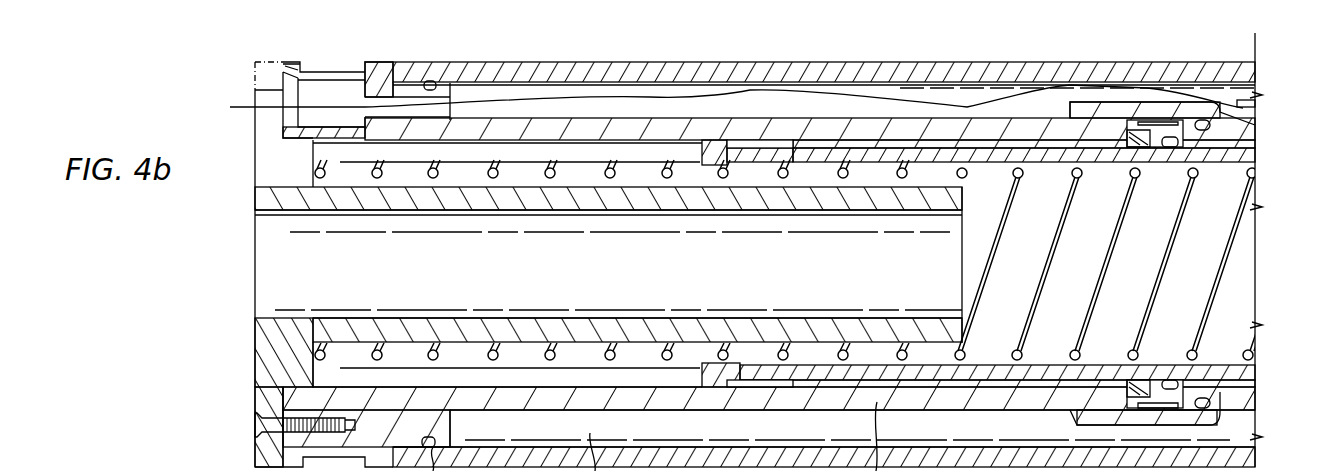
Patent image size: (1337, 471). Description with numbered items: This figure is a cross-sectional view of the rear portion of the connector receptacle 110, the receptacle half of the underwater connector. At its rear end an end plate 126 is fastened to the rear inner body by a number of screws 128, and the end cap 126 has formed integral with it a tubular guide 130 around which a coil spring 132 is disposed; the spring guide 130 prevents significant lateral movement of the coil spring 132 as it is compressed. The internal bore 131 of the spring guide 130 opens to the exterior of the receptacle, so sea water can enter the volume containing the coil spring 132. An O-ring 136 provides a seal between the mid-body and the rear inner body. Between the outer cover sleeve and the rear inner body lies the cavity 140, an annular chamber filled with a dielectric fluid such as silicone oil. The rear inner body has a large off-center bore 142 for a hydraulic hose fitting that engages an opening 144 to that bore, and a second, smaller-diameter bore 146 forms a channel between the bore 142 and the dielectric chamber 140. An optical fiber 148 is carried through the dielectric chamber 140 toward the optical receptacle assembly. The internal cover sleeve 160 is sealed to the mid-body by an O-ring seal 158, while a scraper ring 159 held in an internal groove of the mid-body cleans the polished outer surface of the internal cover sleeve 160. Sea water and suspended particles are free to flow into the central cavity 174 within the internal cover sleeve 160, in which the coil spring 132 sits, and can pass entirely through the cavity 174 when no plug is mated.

The connector receptacle 110 is at (232, 270).
The end plate 126 is at (255, 344).
The screws 128 is at (255, 424).
The tubular guide 130 is at (748, 318).
The internal bore 131 is at (672, 318).
The coil spring 132 is at (990, 267).
The O-ring 136 is at (1215, 402).
The cavity 140 is at (786, 104).
The off-center bore 142 is at (320, 84).
The opening 144 is at (283, 78).
The smaller-diameter bore 146 is at (417, 110).
The optical fiber 148 is at (563, 97).
The O-ring seal 158 is at (1170, 135).
The scraper ring 159 is at (1140, 133).
The internal cover sleeve 160 is at (1220, 366).
The central cavity 174 is at (1250, 273).